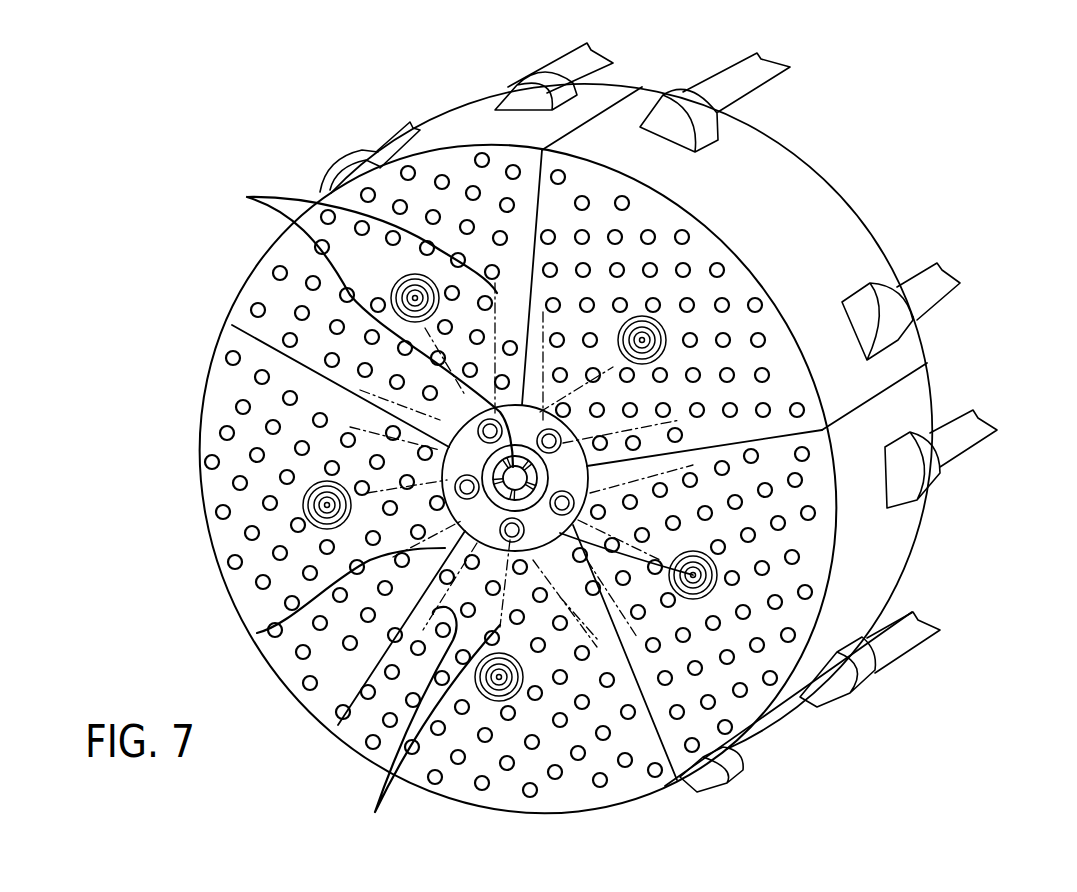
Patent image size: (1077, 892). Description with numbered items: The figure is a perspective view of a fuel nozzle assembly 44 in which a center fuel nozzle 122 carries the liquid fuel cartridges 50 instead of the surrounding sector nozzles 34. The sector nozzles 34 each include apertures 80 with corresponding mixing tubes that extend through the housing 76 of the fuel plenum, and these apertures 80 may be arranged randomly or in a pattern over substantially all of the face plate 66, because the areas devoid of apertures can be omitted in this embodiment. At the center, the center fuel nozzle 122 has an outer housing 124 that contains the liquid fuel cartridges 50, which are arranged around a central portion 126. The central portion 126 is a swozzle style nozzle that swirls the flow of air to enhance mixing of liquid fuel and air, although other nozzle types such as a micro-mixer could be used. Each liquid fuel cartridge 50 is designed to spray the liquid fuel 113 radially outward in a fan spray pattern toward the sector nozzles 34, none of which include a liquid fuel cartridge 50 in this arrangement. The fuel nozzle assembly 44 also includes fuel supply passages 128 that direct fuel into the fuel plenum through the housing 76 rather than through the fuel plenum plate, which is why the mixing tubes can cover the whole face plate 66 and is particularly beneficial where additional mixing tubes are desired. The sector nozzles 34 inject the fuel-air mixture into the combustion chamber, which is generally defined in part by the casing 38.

The sector nozzle 34 is at (862, 113).
The casing 38 is at (475, 113).
The fuel nozzle assembly 44 is at (326, 137).
The liquid fuel cartridge 50 is at (500, 531).
The face plate 66 is at (740, 713).
The housing 76 is at (916, 345).
The aperture 80 is at (764, 373).
The liquid fuel 113 is at (197, 637).
The center fuel nozzle 122 is at (434, 421).
The outer housing 124 is at (693, 575).
The central portion 126 is at (500, 412).
The fuel supply passage 128 is at (747, 67).